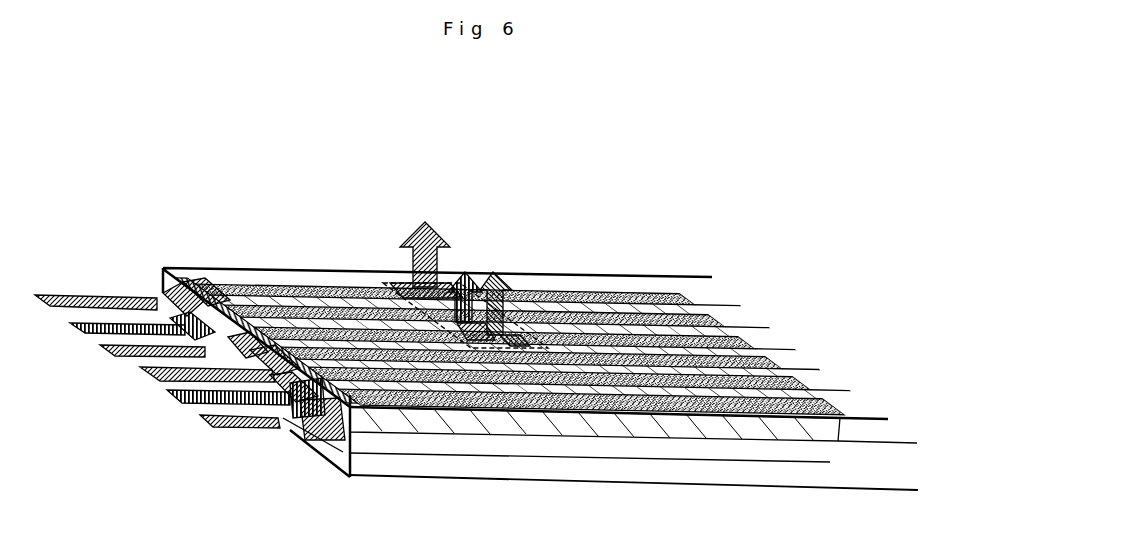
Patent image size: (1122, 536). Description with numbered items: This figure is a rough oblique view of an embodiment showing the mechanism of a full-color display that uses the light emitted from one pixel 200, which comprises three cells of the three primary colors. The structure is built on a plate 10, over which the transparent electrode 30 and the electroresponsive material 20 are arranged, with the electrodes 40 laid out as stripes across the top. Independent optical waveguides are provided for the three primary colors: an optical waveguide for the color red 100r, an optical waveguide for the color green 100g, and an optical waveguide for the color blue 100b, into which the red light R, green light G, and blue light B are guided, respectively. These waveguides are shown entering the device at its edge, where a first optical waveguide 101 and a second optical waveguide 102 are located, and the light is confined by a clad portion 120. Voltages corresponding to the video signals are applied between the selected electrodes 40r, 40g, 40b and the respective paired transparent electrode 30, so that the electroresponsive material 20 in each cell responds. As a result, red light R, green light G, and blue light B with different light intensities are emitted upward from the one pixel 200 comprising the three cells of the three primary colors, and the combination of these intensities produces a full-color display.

The plate 10 is at (470, 462).
The transparent electrode 30 is at (611, 432).
The electrode 40 is at (531, 297).
The electrode 40r is at (402, 287).
The electrode 40g is at (477, 316).
The electrode 40b is at (511, 331).
The electroresponsive material 20 is at (182, 278).
The optical waveguide for the color red 100r is at (195, 284).
The optical waveguide for the color green 100g is at (162, 376).
The optical waveguide for the color blue 100b is at (190, 403).
The first optical waveguide 101 is at (162, 300).
The second optical waveguide 102 is at (165, 287).
The clad portion 120 is at (337, 444).
The pixel 200 is at (390, 283).
The red light R is at (241, 301).
The green light G is at (271, 333).
The blue light B is at (302, 347).